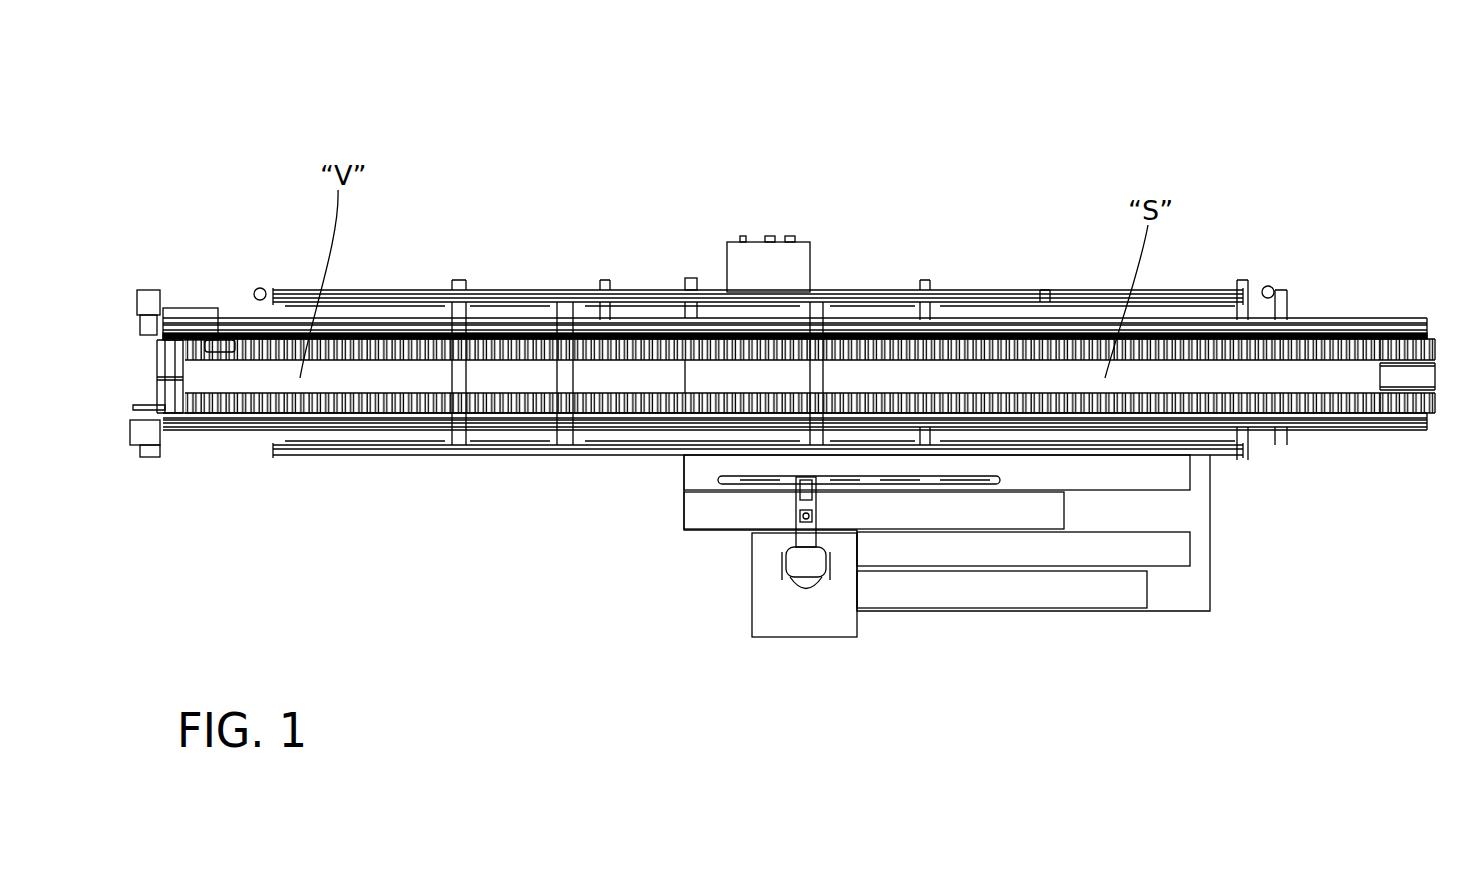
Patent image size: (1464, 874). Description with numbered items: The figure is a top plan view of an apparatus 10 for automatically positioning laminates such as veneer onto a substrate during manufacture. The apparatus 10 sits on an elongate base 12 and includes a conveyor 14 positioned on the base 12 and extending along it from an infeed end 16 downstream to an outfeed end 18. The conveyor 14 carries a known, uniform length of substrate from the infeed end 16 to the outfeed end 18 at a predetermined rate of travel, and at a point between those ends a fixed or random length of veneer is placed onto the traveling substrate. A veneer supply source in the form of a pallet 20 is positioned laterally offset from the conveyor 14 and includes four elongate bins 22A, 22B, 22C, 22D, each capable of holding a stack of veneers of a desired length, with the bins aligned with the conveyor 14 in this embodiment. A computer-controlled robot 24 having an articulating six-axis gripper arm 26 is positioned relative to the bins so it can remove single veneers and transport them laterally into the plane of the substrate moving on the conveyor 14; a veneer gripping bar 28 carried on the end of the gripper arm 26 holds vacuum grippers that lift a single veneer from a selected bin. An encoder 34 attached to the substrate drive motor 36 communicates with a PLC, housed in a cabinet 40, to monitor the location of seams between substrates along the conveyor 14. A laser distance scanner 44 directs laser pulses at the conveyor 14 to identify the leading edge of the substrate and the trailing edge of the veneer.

The apparatus 10 is at (680, 62).
The elongate base 12 is at (400, 320).
The conveyor 14 is at (955, 347).
The infeed end 16 is at (1437, 345).
The outfeed end 18 is at (160, 385).
The pallet 20 is at (1183, 593).
The bin 22A is at (1168, 472).
The bin 22B is at (958, 512).
The bin 22C is at (1080, 548).
The bin 22D is at (1115, 597).
The computer-controlled robot 24 is at (750, 605).
The articulating 6-axis gripper arm 26 is at (800, 532).
The veneer gripping bar 28 is at (780, 477).
The encoder 34 is at (208, 323).
The substrate drive motor 36 is at (190, 310).
The cabinet 40 is at (760, 250).
The laser distance scanner 44 is at (688, 285).